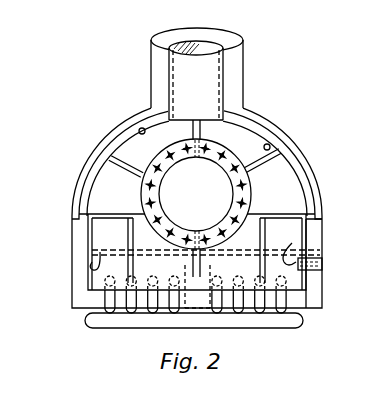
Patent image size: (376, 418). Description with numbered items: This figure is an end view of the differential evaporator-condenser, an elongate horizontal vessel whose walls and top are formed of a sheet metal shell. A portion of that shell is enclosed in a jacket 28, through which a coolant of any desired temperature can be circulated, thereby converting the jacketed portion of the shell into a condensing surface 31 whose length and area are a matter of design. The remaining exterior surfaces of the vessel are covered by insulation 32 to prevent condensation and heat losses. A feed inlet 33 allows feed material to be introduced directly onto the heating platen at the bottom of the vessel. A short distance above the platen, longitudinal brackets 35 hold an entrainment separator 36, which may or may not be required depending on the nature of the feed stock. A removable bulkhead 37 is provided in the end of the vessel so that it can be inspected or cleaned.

The jacket 28 is at (103, 141).
The condensing surface 31 is at (140, 129).
The insulation 32 is at (322, 248).
The feed inlet 33 is at (322, 268).
The longitudinal brackets 35 is at (90, 260).
The entrainment separator 36 is at (108, 251).
The removable bulkhead 37 is at (372, 166).